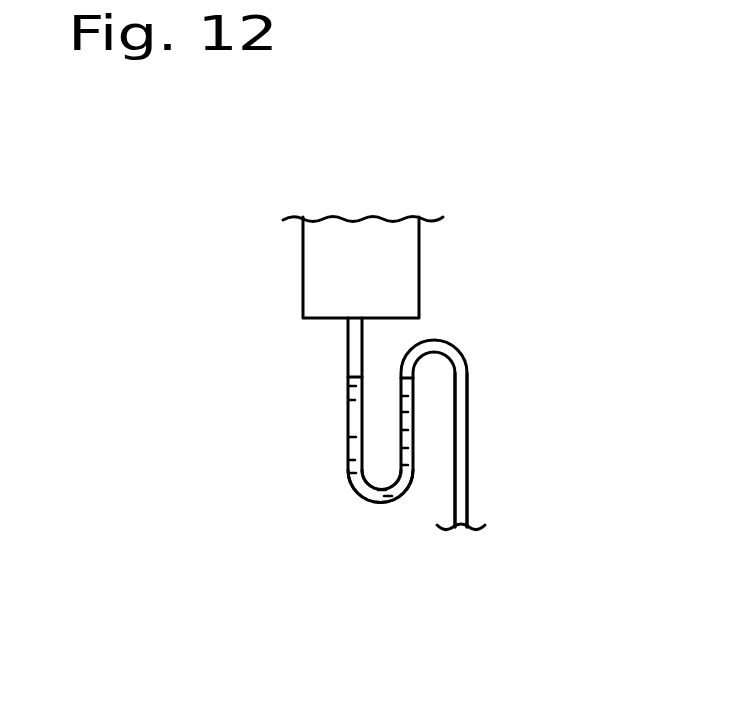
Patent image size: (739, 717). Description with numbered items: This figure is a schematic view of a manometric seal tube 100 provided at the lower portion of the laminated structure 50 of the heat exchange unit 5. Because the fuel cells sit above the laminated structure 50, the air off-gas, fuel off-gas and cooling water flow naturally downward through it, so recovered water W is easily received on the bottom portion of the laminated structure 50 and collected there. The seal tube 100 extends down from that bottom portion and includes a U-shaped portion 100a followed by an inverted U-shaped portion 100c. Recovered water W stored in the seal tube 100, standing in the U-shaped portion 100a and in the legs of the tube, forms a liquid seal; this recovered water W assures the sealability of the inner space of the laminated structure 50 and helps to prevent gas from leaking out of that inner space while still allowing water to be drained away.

The heat exchange unit 5 is at (419, 233).
The laminated structure 50 is at (407, 250).
The manometric seal tube 100 is at (347, 448).
The U-shaped portion 100a is at (358, 490).
The inverted U-shaped portion 100c is at (463, 448).
The recovered water W is at (347, 412).